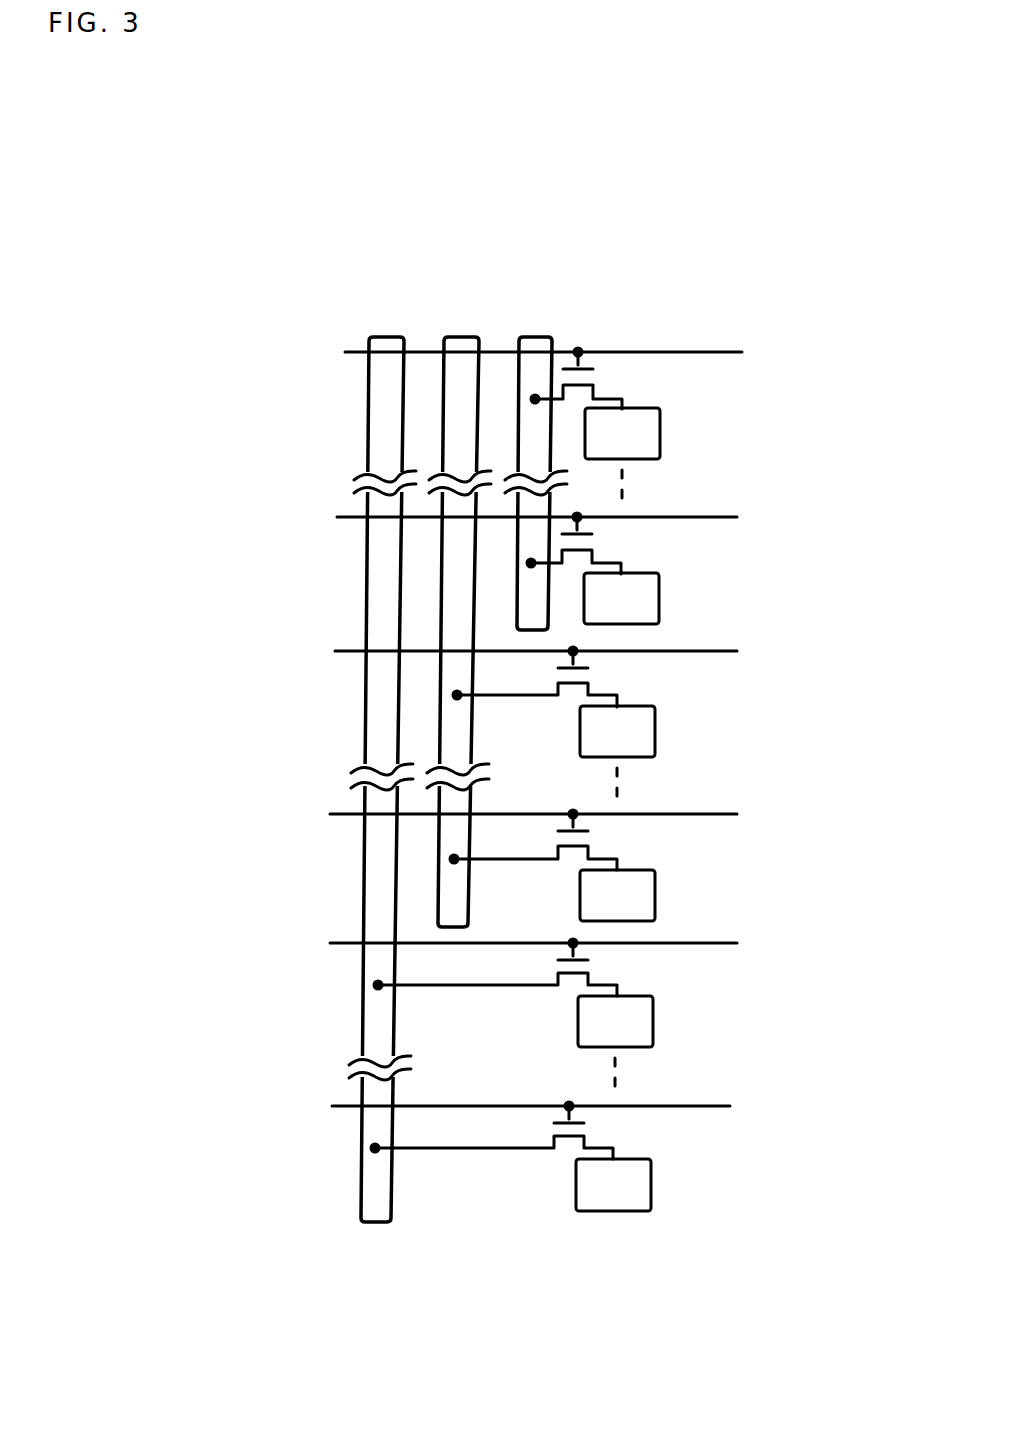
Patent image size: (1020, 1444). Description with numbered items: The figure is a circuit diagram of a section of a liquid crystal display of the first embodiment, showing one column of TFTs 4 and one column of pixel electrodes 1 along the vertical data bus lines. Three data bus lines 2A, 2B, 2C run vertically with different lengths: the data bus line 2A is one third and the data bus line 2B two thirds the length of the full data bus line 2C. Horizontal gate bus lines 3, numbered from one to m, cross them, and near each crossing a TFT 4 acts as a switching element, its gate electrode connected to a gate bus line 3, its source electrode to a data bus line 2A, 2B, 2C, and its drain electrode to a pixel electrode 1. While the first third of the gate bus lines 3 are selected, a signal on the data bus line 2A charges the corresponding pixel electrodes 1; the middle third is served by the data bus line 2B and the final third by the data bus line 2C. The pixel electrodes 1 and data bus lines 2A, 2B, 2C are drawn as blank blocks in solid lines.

The pixel electrode 1 is at (645, 435).
The data bus line 2A is at (530, 337).
The data bus line 2B is at (450, 337).
The data bus line 2C is at (372, 1222).
The gate bus line 3 is at (643, 352).
The TFT 4 is at (593, 390).